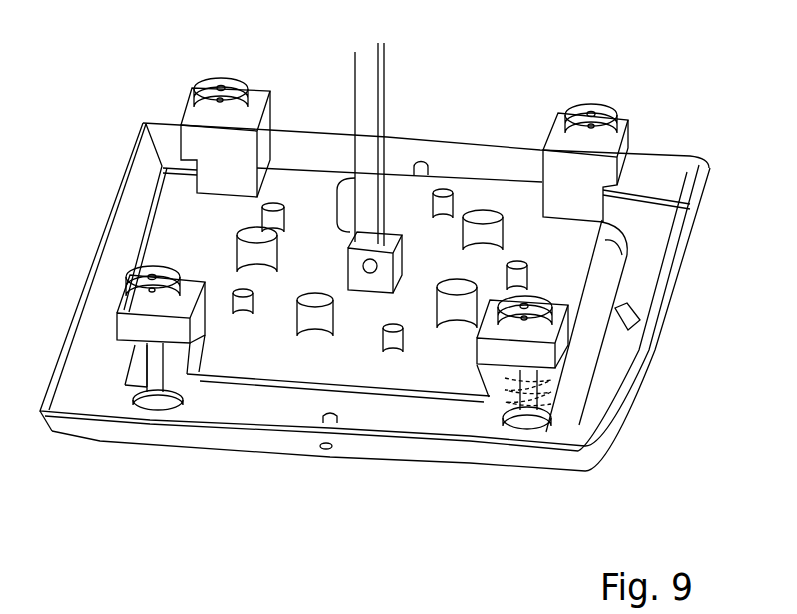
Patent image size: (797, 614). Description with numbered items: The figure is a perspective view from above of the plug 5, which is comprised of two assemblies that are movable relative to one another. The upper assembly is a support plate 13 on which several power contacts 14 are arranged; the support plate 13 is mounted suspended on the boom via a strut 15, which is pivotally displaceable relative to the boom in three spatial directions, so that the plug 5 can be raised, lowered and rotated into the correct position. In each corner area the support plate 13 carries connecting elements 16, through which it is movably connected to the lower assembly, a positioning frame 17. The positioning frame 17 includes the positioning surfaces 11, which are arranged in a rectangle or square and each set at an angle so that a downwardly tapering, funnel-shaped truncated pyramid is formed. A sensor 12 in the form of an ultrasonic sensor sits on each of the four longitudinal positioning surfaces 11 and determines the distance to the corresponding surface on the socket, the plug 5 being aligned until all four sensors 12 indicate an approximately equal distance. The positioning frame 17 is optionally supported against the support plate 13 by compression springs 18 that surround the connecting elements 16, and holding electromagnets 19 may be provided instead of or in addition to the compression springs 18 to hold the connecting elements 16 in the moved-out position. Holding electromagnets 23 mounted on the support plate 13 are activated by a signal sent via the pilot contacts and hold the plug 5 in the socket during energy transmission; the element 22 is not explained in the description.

The plug 5 is at (513, 108).
The positioning surfaces 11 is at (668, 181).
The sensor 12 is at (318, 452).
The support plate 13 is at (405, 195).
The power contacts 14 is at (234, 228).
The strut 15 is at (365, 55).
The connecting elements 16 is at (213, 78).
The positioning frame 17 is at (517, 470).
The compression springs 18 is at (557, 404).
The holding electromagnets 19 is at (246, 112).
The pin 22 is at (520, 262).
The holding electromagnets 23 is at (410, 206).